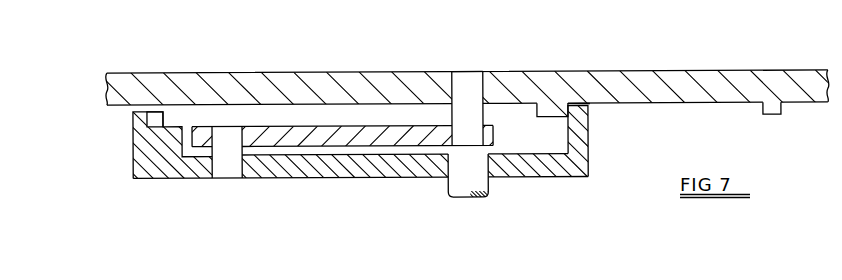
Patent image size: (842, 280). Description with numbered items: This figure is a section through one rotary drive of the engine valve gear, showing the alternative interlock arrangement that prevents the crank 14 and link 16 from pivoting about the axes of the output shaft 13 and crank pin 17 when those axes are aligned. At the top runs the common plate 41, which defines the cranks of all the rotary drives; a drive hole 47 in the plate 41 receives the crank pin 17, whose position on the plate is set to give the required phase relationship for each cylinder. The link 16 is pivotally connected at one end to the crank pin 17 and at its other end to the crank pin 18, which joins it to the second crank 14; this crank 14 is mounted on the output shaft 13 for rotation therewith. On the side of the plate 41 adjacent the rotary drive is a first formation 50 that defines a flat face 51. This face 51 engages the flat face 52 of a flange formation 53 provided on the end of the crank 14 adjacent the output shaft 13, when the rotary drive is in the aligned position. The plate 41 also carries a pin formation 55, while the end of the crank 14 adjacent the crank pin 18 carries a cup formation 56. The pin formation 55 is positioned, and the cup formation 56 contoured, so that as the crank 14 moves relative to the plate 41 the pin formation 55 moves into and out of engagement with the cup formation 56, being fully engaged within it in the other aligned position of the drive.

The plate 41 is at (273, 82).
The first formation 50 is at (553, 110).
The flat face 51 is at (575, 103).
The pin formation 55 is at (775, 113).
The second crank 14 is at (328, 173).
The cup formation 56 is at (140, 117).
The crank pin 18 is at (232, 168).
The link 16 is at (412, 140).
The crank pin 17 is at (473, 77).
The drive hole 47 is at (453, 84).
The output shaft 13 is at (466, 180).
The flange formation 53 is at (582, 135).
The flat face 52 is at (569, 132).